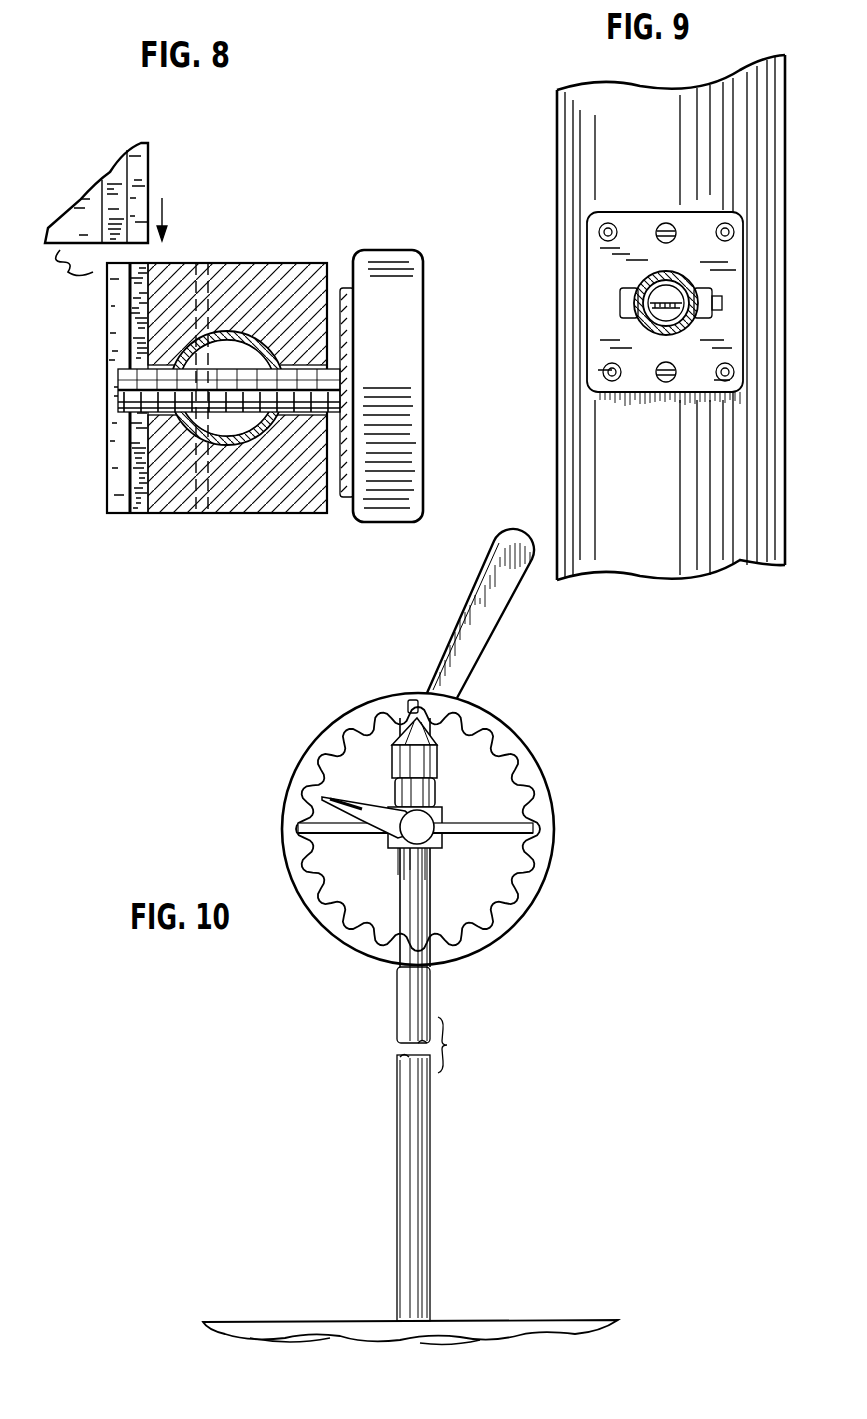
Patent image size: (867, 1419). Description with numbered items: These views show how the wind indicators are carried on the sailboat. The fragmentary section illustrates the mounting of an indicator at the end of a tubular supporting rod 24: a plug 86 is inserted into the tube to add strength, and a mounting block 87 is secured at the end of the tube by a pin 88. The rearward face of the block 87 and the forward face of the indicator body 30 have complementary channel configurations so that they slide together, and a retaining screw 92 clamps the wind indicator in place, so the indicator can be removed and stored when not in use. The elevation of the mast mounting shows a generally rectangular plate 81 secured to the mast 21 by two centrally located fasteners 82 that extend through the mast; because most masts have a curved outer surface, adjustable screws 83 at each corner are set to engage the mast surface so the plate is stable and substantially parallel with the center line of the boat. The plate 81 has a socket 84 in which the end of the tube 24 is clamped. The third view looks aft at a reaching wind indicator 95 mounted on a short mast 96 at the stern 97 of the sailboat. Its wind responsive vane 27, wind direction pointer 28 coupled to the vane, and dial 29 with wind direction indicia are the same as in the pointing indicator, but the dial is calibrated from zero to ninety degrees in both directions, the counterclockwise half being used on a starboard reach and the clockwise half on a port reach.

In FIG. 9, the mast 21 is at (658, 558).
In FIG. 8, the supporting rod 24 is at (227, 333).
In FIG. 10, the wind responsive vane 27 is at (490, 588).
In FIG. 10, the wind direction pointer 28 is at (378, 817).
In FIG. 10, the dial 29 is at (507, 718).
In FIG. 8, the body 30 is at (74, 220).
In FIG. 9, the mounting plate 81 is at (612, 292).
In FIG. 9, the fastener 82 is at (674, 224).
In FIG. 9, the adjustable screw 83 is at (614, 224).
In FIG. 9, the socket 84 is at (686, 278).
In FIG. 8, the plug 86 is at (240, 420).
In FIG. 8, the mounting block 87 is at (311, 276).
In FIG. 8, the pin 88 is at (205, 262).
In FIG. 8, the retaining screw 92 is at (393, 362).
In FIG. 10, the reaching wind indicator 95 is at (414, 1071).
In FIG. 10, the short mast 96 is at (415, 1115).
In FIG. 10, the stern 97 is at (492, 1327).